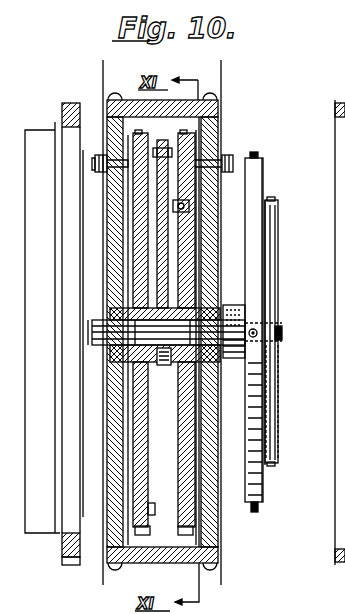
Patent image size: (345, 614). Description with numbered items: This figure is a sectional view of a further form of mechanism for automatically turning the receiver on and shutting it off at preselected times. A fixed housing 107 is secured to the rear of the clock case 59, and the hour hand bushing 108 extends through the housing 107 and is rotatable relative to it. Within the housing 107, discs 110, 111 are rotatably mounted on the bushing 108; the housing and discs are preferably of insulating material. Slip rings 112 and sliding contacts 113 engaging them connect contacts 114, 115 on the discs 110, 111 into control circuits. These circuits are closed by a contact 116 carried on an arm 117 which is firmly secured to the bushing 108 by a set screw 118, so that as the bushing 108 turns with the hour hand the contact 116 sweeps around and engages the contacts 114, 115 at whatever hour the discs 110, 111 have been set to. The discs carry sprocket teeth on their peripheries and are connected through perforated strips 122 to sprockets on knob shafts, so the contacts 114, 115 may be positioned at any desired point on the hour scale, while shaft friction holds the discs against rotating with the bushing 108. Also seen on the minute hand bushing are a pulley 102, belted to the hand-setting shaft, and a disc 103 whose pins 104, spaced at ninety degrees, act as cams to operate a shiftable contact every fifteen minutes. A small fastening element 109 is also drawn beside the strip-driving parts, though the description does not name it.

The clock case 59 is at (45, 527).
The pulley 102 is at (270, 258).
The disc 103 is at (258, 173).
The pins 104 is at (275, 150).
The fixed housing 107 is at (208, 531).
The hour hand bushing 108 is at (92, 322).
The nut 109 is at (282, 333).
The disc 110 is at (188, 192).
The disc 111 is at (140, 198).
The slip rings 112 is at (120, 178).
The sliding contacts 113 is at (93, 153).
The contact 114 is at (185, 212).
The contact 115 is at (150, 512).
The contact 116 is at (158, 147).
The arm 117 is at (168, 256).
The set screw 118 is at (160, 365).
The perforated strips 122 is at (141, 136).